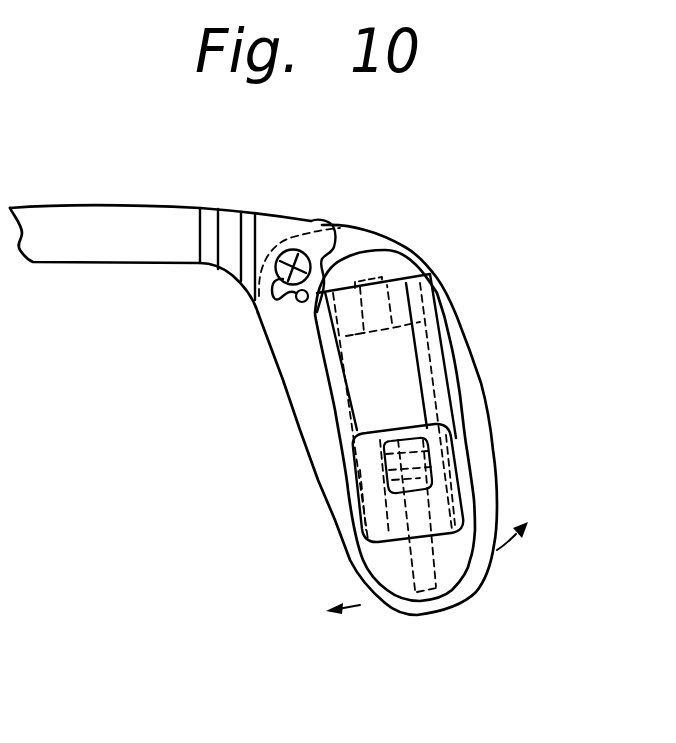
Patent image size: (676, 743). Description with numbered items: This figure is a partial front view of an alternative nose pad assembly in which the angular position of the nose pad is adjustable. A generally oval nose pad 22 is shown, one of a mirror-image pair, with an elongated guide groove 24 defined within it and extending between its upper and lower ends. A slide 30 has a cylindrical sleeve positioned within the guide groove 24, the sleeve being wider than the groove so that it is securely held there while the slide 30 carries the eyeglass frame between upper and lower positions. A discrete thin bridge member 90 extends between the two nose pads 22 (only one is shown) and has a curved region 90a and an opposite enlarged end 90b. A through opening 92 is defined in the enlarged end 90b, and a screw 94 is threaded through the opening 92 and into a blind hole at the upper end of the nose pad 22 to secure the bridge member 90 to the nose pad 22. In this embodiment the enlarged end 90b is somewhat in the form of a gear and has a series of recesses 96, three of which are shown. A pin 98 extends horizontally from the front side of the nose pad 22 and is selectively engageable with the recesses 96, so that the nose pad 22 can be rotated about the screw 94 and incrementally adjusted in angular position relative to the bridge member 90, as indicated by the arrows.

The nose pad 22 is at (460, 387).
The guide groove 24 is at (436, 345).
The slide 30 is at (455, 447).
The bridge member 90 is at (68, 220).
The curved region 90a is at (228, 213).
The enlarged end 90b is at (328, 228).
The through opening 92 is at (302, 248).
The screw 94 is at (274, 298).
The recesses 96 is at (338, 244).
The pin 98 is at (298, 302).